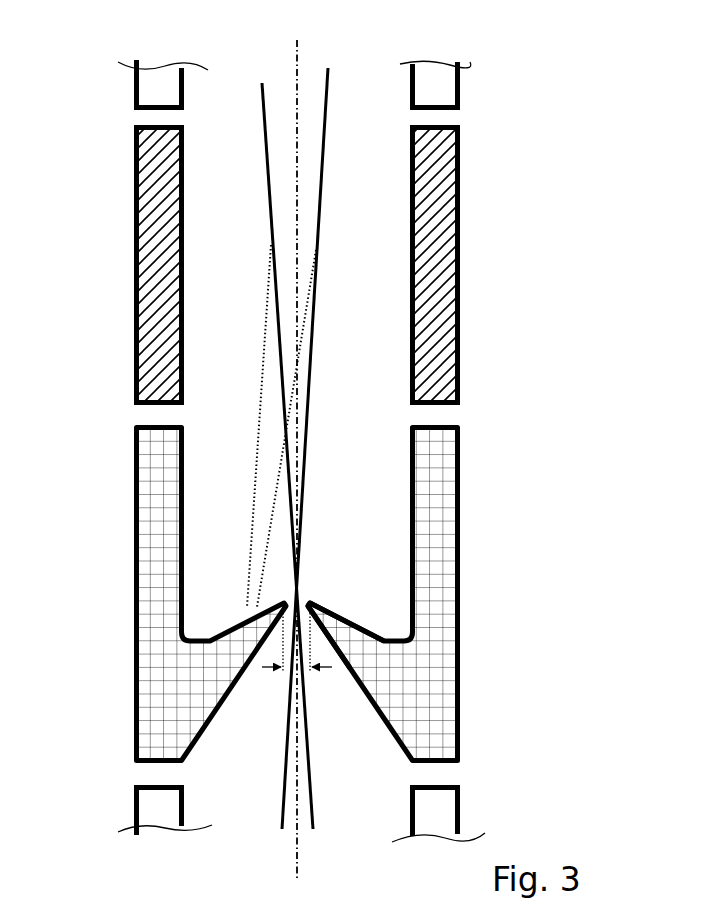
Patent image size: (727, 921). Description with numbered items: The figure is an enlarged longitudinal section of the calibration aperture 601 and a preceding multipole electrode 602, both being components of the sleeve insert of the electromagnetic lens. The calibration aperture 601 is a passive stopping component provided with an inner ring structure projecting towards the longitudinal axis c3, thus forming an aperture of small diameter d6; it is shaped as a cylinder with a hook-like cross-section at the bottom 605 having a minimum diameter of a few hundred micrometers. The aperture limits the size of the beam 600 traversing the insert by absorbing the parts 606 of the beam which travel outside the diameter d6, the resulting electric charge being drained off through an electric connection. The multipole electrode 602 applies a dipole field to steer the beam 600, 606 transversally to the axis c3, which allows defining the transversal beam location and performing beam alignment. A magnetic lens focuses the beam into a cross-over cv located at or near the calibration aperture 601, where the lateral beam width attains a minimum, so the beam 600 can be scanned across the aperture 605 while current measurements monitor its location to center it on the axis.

The beam 600 is at (332, 117).
The calibration aperture 601 is at (131, 609).
The multipole electrode 602 is at (131, 266).
The hook-like cross-section at the bottom 605 is at (315, 595).
The parts of the beam 606 is at (251, 464).
The longitudinal axis c3 is at (299, 444).
The cross-over cv is at (303, 579).
The diameter d6 is at (306, 653).